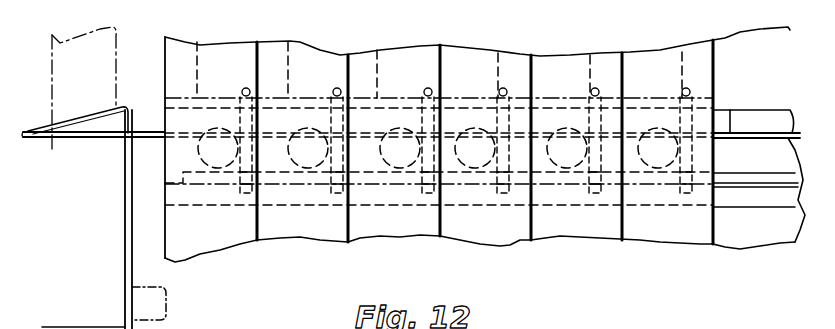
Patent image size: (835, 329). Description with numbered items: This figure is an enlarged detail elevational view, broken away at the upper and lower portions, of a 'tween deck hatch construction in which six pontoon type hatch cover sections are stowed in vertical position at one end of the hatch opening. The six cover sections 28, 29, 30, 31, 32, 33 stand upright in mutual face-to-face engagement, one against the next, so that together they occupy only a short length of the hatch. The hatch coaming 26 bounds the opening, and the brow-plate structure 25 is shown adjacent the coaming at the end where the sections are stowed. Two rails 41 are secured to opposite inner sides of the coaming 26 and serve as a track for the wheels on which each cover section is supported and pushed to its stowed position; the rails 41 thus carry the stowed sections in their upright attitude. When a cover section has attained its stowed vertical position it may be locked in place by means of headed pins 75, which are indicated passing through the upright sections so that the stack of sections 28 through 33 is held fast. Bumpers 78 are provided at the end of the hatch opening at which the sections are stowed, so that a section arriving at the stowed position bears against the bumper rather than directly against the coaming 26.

The brow-plate structure 25 is at (755, 126).
The hatch coaming 26 is at (132, 231).
The cover section 28 is at (665, 227).
The cover section 29 is at (572, 225).
The cover section 30 is at (483, 228).
The cover section 31 is at (393, 217).
The cover section 32 is at (303, 230).
The cover section 33 is at (210, 238).
The rail 41 is at (783, 175).
The headed pin 75 is at (244, 102).
The bumper 78 is at (143, 304).